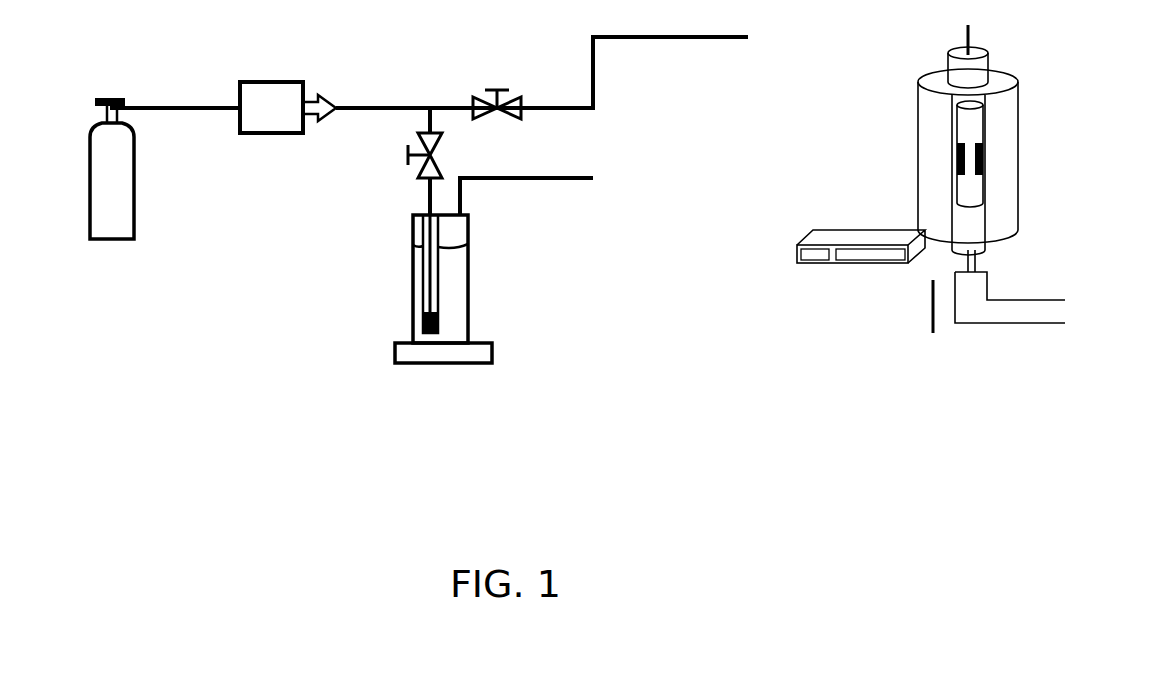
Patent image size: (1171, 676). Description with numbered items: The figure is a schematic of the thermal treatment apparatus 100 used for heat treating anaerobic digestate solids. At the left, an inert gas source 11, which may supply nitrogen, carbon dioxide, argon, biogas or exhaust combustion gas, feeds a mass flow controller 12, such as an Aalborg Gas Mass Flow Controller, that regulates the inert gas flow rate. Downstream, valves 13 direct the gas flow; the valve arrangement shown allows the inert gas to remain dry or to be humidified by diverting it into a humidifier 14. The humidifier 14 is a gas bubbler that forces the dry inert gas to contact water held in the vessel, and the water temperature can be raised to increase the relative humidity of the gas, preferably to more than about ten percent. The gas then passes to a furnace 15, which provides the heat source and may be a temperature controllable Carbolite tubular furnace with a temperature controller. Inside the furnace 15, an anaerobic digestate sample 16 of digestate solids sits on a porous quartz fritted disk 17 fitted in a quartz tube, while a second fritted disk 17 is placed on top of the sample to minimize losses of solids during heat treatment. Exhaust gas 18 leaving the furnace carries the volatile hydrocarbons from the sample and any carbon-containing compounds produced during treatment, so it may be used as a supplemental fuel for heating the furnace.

The system 100 is at (695, 472).
The inert gas source 11 is at (108, 256).
The mass flow controller 12 is at (281, 78).
The valves 13 is at (395, 143).
The humidifier 14 is at (490, 297).
The furnace 15 is at (946, 179).
The anaerobic digestate sample 16 is at (998, 152).
The porous quartz fritted disk 17 is at (977, 118).
The exhaust gas 18 is at (1043, 308).